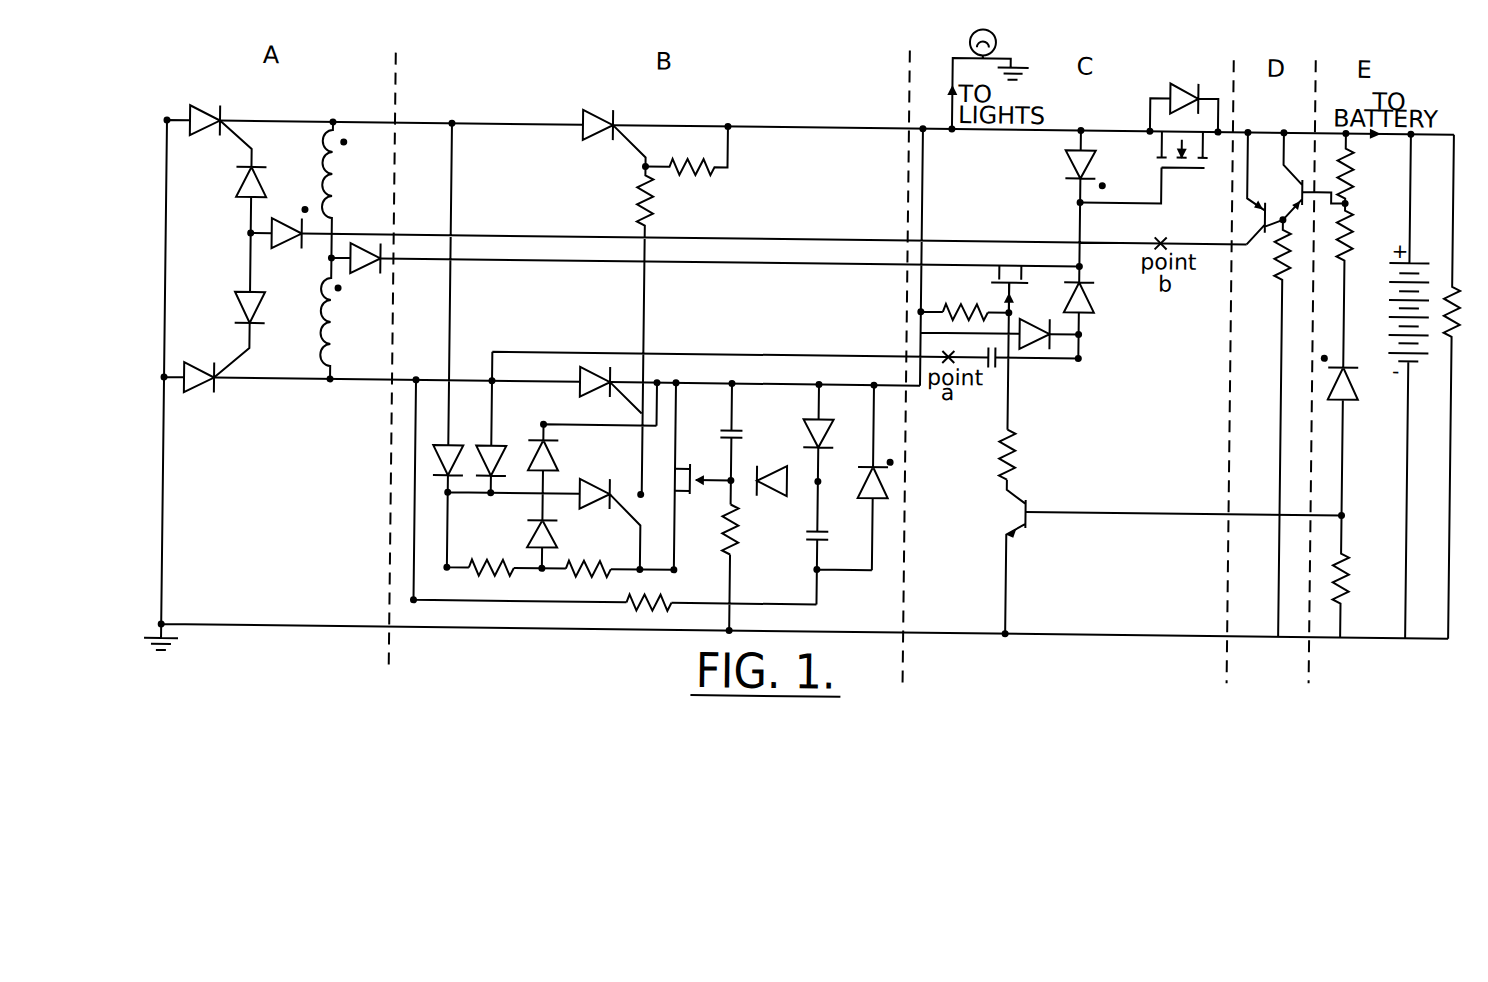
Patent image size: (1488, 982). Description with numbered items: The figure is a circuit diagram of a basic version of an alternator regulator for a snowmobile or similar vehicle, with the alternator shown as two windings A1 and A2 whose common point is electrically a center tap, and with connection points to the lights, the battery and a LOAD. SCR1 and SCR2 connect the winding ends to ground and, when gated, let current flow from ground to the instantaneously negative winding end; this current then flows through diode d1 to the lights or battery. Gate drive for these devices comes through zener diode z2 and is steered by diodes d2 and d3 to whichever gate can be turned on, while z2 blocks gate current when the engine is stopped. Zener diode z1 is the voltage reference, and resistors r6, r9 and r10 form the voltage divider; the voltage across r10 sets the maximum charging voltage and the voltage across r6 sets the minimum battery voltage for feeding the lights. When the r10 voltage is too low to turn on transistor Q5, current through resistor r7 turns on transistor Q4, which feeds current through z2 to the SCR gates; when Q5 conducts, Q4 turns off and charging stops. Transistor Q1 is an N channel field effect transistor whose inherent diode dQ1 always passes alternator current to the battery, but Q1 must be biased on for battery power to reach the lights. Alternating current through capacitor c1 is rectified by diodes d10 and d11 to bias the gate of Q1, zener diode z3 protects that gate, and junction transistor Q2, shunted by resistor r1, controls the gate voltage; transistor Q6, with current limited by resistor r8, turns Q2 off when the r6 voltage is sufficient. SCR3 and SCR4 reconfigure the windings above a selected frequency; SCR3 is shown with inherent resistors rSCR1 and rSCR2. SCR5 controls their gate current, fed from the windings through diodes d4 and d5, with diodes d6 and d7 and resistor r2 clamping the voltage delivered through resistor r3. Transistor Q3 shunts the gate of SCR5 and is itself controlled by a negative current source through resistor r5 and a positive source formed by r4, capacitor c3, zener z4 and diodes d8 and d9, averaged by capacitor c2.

The silicon controlled rectifier SCR1 is at (214, 122).
The silicon controlled rectifier SCR2 is at (207, 373).
The silicon controlled rectifier SCR3 is at (607, 125).
The silicon controlled rectifier SCR4 is at (578, 386).
The small sensitive gate silicon controlled rectifier SCR5 is at (607, 512).
The diode d1 is at (366, 271).
The diode d2 is at (235, 181).
The diode d3 is at (234, 307).
The diode d4 is at (456, 447).
The diode d5 is at (500, 447).
The diode d6 is at (557, 451).
The diode d7 is at (556, 536).
The diode d8 is at (829, 421).
The diode d9 is at (773, 469).
The diode d10 is at (1037, 321).
The diode d11 is at (1105, 297).
The equivalent diode dQ1 is at (1184, 92).
The zener diode z1 is at (1359, 441).
The zener diode z2 is at (287, 221).
The zener diode z3 is at (1097, 164).
The zener diode z4 is at (879, 496).
The alternator winding A1 is at (345, 190).
The alternator winding A2 is at (343, 319).
The resistor r1 is at (965, 300).
The current limiting resistor r2 is at (491, 556).
The resistor r3 is at (588, 557).
The resistor r4 is at (648, 593).
The current limiting resistor r5 is at (743, 529).
The resistor r6 is at (1352, 576).
The resistor r7 is at (1294, 428).
The resistor r8 is at (1022, 455).
The resistor r9 is at (1360, 285).
The resistor r10 is at (1369, 168).
The gate to cathode resistor rSCR1 is at (690, 165).
The gate series resistor rSCR2 is at (680, 202).
The capacitor c1 is at (1003, 369).
The capacitor c2 is at (742, 418).
The capacitor c3 is at (828, 521).
The N channel field effect transistor Q1 is at (1144, 167).
The N channel junction field effect transistor Q2 is at (1010, 278).
The N channel junction field effect transistor Q3 is at (690, 481).
The transistor Q4 is at (1265, 188).
The transistor Q5 is at (1314, 177).
The transistor Q6 is at (1032, 557).
The load LOAD is at (1462, 387).